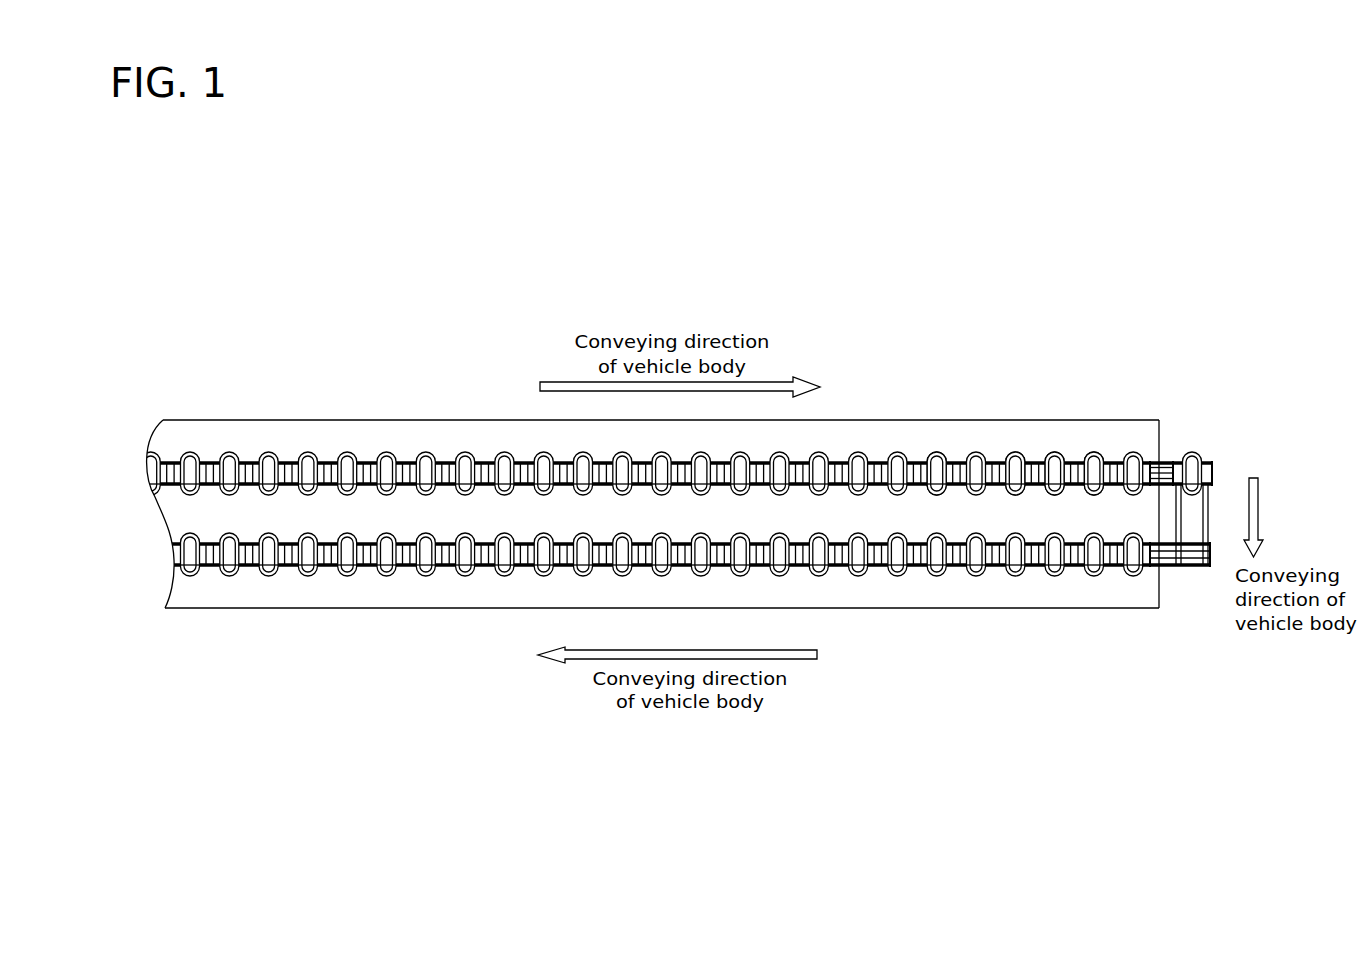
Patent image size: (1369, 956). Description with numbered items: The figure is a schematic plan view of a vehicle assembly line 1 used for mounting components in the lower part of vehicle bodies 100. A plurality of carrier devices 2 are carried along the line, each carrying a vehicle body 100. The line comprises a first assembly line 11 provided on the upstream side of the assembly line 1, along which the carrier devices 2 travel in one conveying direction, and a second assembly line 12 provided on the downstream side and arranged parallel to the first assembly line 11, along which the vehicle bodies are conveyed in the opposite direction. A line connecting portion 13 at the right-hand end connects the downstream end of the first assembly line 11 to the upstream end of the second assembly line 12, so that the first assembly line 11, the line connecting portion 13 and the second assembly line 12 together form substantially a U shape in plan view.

The vehicle assembly line 1 is at (814, 351).
The carrier devices 2 is at (1000, 461).
The first assembly line 11 is at (426, 434).
The second assembly line 12 is at (847, 585).
The line connecting portion 13 is at (1225, 492).
The vehicle bodies 100 is at (935, 451).